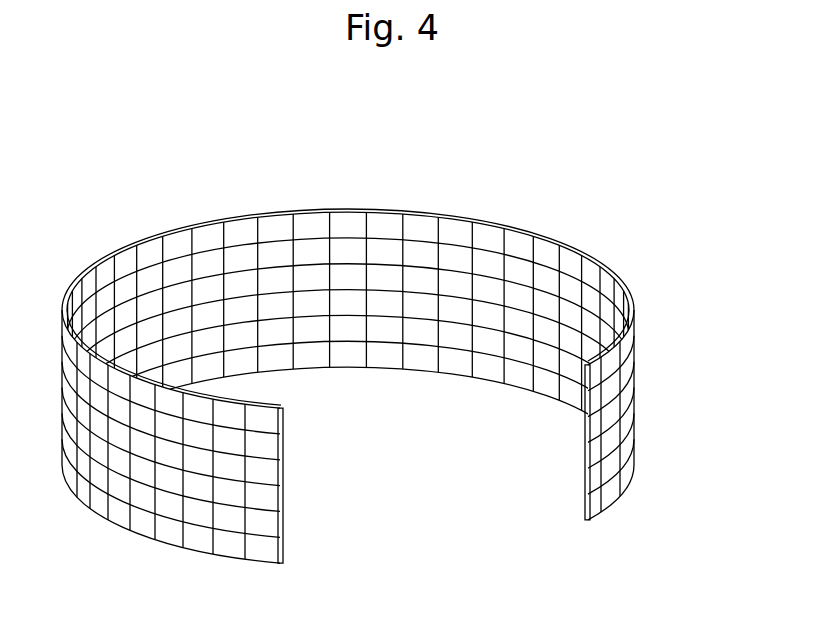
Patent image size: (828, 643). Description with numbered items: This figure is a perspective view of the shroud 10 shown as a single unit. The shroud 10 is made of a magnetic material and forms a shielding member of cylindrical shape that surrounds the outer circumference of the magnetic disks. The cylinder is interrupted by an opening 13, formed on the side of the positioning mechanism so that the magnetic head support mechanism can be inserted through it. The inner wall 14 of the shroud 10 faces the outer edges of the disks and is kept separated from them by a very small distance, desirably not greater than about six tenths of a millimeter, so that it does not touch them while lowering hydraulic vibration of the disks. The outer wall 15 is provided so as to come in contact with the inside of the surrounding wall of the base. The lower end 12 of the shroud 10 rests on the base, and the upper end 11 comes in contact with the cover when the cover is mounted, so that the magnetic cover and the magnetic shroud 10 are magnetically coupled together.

The shroud 10 is at (154, 194).
The upper end 11 is at (595, 260).
The lower end 12 is at (608, 508).
The opening 13 is at (283, 505).
The inner wall 14 is at (349, 353).
The outer wall 15 is at (636, 408).